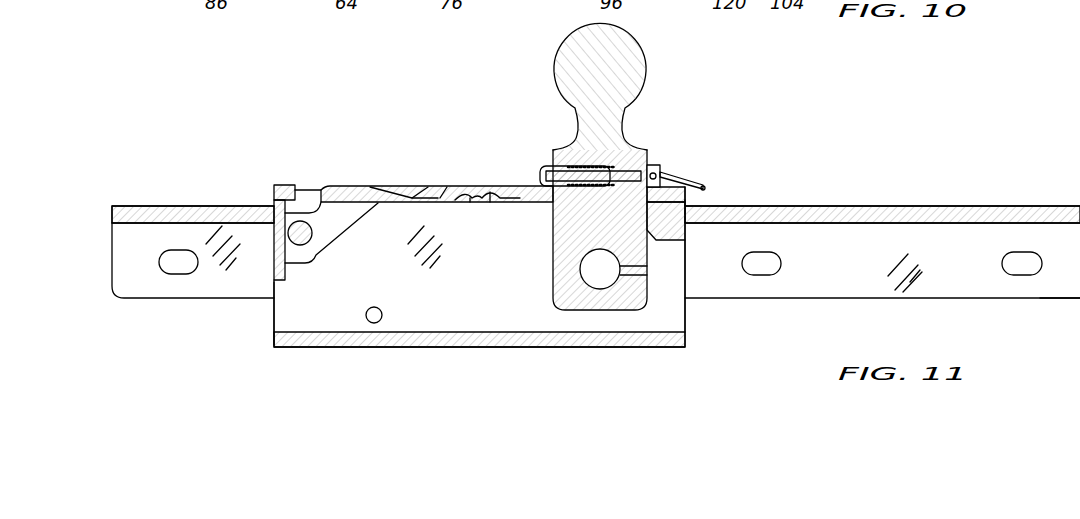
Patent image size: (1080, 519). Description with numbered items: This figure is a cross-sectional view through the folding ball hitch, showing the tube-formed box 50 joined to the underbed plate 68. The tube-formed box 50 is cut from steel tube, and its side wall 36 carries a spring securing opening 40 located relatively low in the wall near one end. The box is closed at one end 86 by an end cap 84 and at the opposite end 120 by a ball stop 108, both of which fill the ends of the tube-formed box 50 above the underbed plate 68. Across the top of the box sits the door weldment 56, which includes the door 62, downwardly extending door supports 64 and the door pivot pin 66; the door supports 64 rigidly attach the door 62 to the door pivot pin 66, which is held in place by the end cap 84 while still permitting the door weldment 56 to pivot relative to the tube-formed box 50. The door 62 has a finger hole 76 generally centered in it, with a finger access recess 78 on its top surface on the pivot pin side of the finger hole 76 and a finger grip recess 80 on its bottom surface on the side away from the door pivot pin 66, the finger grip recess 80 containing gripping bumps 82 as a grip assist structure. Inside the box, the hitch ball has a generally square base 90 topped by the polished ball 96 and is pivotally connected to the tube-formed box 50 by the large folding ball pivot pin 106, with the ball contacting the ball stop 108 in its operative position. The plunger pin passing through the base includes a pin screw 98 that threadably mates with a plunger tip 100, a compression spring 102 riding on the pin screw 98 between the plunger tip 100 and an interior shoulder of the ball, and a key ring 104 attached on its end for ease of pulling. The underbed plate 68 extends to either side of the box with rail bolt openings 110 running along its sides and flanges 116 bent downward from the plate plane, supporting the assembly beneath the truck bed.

The side wall 36 is at (437, 287).
The spring securing opening 40 is at (373, 323).
The tube-formed box 50 is at (404, 341).
The door weldment 56 is at (346, 188).
The door 62 is at (362, 187).
The door support 64 is at (313, 260).
The door pivot pin 66 is at (310, 200).
The underbed plate 68 is at (880, 206).
The finger hole 76 is at (442, 197).
The finger access recess 78 is at (405, 193).
The finger grip recess 80 is at (470, 198).
The gripping bump 82 is at (490, 192).
The end cap 84 is at (274, 247).
The end 86 is at (274, 314).
The square base 90 is at (647, 290).
The ball 96 is at (553, 63).
The pin screw 98 is at (655, 165).
The plunger tip 100 is at (548, 167).
The compression spring 102 is at (592, 167).
The key ring 104 is at (702, 187).
The folding ball pivot pin 106 is at (600, 285).
The ball stop 108 is at (680, 205).
The rail bolt opening 110 is at (186, 275).
The flange 116 is at (1063, 268).
The end 120 is at (685, 319).